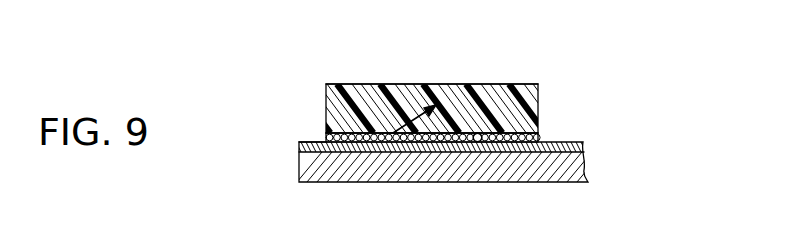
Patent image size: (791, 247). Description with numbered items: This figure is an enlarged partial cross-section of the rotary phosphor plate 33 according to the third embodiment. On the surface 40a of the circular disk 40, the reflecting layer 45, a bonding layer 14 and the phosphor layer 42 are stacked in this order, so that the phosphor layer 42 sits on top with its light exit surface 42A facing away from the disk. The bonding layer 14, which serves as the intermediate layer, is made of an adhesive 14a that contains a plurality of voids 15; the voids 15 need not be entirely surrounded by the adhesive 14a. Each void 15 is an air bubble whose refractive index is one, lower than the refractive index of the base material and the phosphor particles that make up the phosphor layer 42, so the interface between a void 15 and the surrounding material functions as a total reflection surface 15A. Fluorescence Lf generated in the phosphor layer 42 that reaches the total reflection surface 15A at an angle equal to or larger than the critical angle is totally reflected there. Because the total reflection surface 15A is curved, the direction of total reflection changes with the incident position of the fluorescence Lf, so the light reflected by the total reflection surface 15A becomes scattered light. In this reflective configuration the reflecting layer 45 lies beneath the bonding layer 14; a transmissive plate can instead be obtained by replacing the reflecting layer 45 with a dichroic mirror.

The rotary phosphor plate 33 is at (555, 57).
The phosphor layer 42 is at (536, 101).
The light exit surface 42A is at (340, 84).
The bonding layer 14 is at (539, 137).
The adhesive 14a is at (513, 133).
The voids 15 is at (477, 142).
The total reflection surface 15A is at (478, 133).
The circular disk 40 is at (350, 168).
The surface of the circular disk 40a is at (310, 143).
The reflecting layer 45 is at (583, 143).
The fluorescence Lf is at (393, 133).